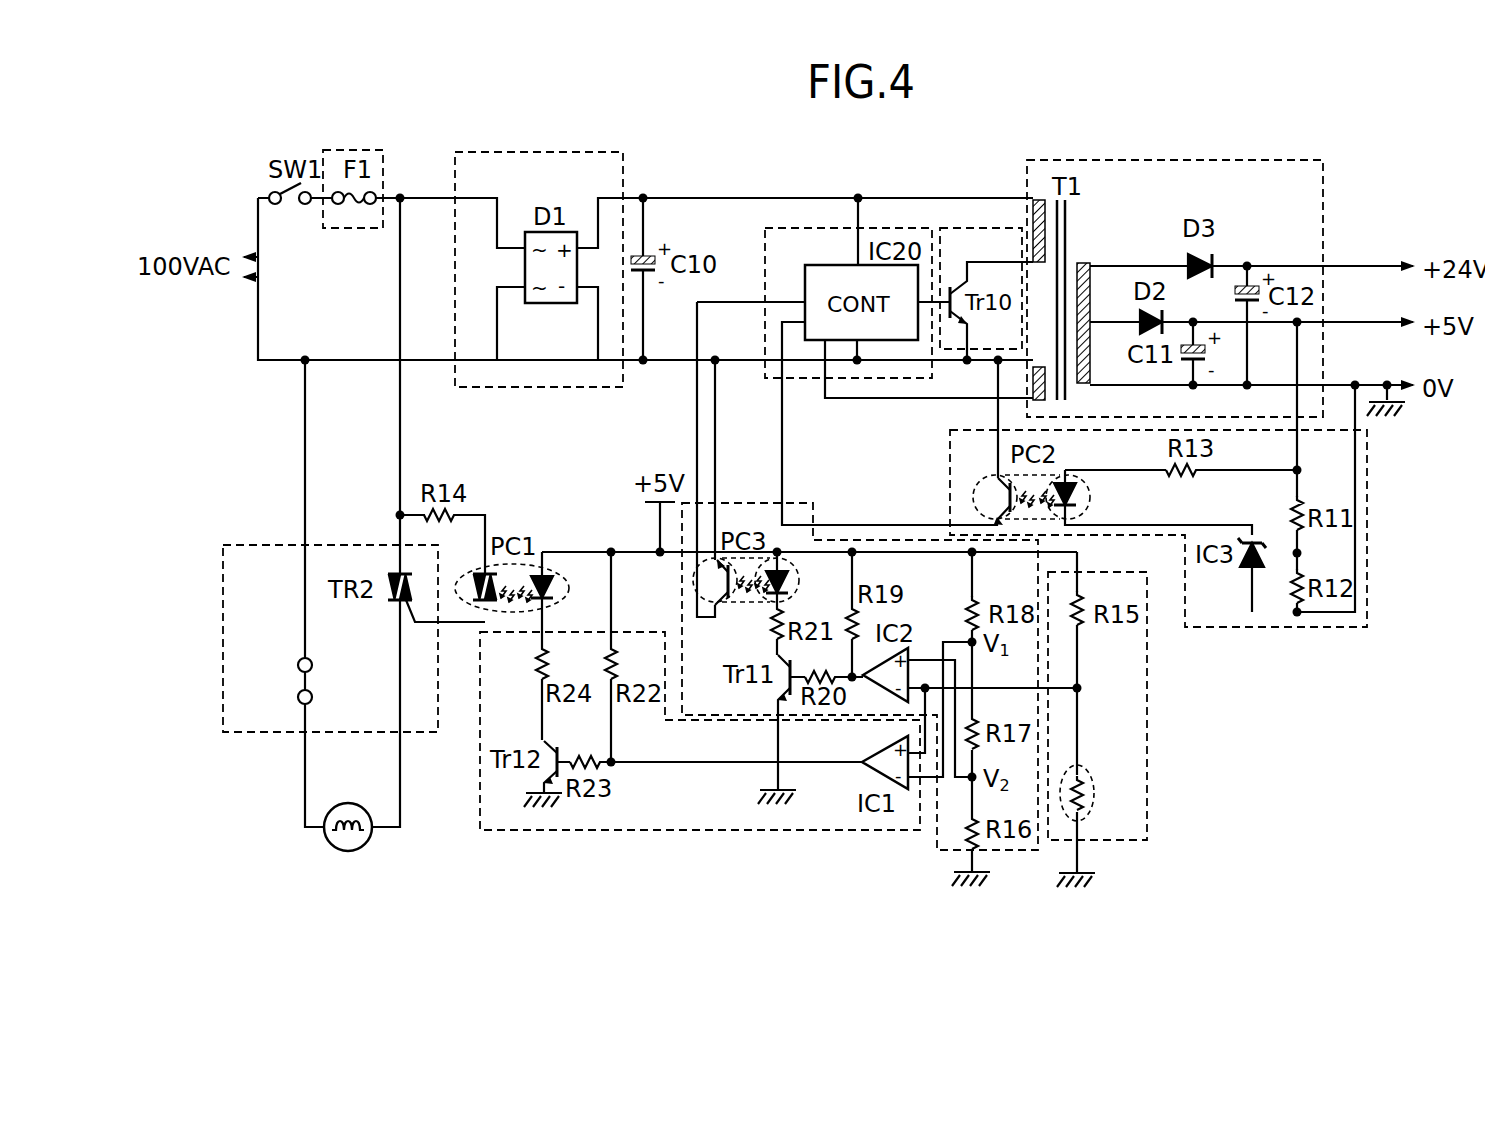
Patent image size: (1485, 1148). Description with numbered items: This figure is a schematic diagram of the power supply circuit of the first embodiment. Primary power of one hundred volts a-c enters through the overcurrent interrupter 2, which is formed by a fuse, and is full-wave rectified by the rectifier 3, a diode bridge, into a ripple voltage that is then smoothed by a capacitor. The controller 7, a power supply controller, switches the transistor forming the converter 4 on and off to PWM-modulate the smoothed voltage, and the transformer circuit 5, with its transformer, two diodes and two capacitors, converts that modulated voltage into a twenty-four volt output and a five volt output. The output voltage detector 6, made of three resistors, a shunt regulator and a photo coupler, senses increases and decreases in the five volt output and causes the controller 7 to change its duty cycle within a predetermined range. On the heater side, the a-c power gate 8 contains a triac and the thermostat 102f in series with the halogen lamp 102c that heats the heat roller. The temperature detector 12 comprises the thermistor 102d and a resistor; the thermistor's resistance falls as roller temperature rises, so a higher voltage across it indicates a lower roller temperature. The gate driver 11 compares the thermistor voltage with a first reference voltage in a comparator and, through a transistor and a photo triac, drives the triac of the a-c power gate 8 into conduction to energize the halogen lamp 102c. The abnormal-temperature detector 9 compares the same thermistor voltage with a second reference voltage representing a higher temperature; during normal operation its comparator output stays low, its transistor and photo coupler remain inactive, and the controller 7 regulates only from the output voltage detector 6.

The overcurrent interrupter 2 is at (358, 152).
The rectifier 3 is at (583, 152).
The converter 4 is at (998, 228).
The transformer circuit 5 is at (1262, 160).
The output voltage detector 6 is at (1245, 630).
The controller 7 is at (830, 228).
The a-c power gate 8 is at (326, 677).
The abnormal-temperature detector 9 is at (935, 852).
The gate driver 11 is at (530, 832).
The temperature detector 12 is at (1136, 717).
The halogen lamp 102c is at (352, 841).
The thermistor 102d is at (1101, 781).
The thermostat 102f is at (281, 680).